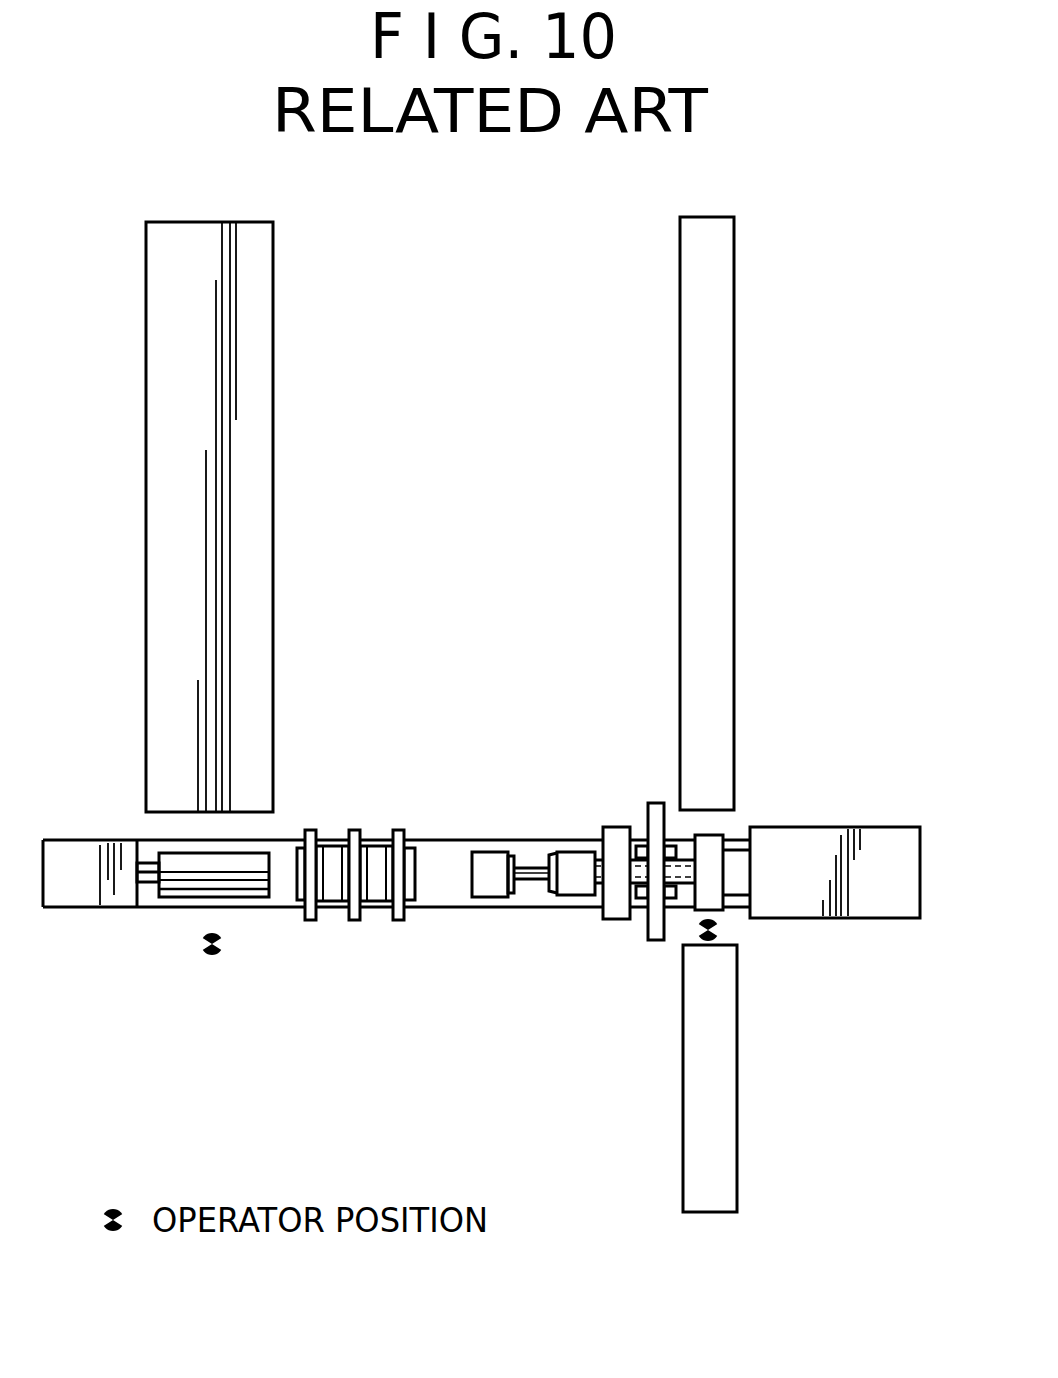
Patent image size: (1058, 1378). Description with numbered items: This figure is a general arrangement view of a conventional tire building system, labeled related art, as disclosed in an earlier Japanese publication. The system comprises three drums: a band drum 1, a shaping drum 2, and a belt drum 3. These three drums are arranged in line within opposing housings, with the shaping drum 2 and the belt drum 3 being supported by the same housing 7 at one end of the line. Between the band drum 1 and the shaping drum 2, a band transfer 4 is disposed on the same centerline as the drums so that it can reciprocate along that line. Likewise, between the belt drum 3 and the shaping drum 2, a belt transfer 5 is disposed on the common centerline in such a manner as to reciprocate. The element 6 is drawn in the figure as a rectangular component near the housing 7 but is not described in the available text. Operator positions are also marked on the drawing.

The band drum 1 is at (245, 897).
The shaping drum 2 is at (483, 897).
The belt drum 3 is at (695, 912).
The band transfer 4 is at (355, 920).
The belt transfer 5 is at (645, 923).
The lower table 6 is at (737, 1108).
The housing 7 is at (797, 918).